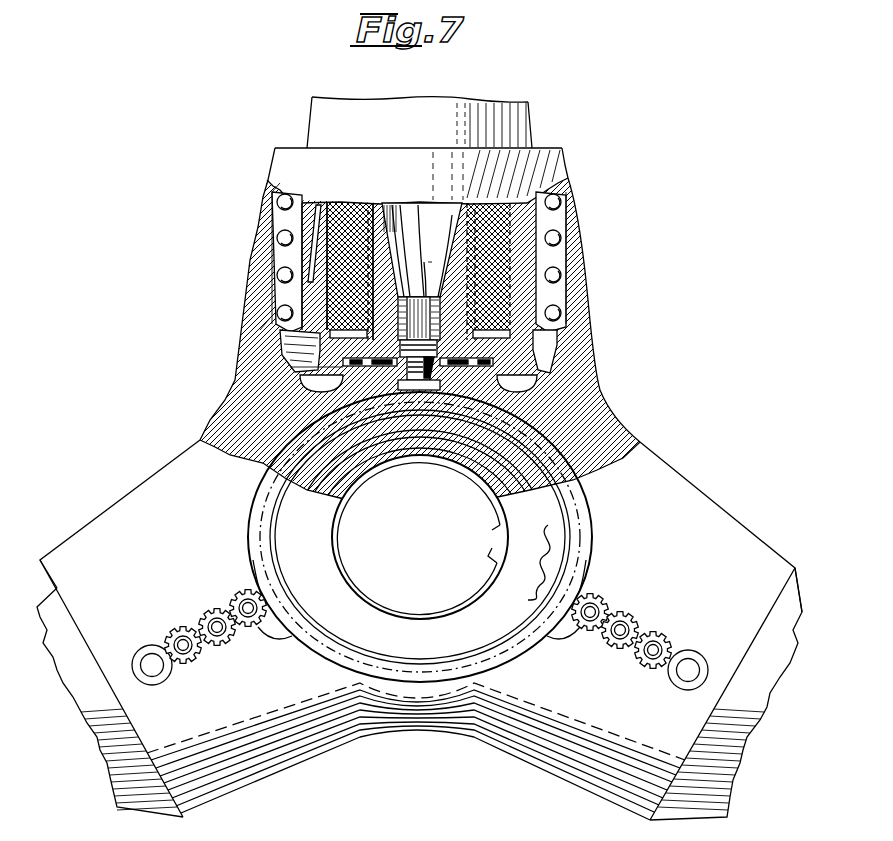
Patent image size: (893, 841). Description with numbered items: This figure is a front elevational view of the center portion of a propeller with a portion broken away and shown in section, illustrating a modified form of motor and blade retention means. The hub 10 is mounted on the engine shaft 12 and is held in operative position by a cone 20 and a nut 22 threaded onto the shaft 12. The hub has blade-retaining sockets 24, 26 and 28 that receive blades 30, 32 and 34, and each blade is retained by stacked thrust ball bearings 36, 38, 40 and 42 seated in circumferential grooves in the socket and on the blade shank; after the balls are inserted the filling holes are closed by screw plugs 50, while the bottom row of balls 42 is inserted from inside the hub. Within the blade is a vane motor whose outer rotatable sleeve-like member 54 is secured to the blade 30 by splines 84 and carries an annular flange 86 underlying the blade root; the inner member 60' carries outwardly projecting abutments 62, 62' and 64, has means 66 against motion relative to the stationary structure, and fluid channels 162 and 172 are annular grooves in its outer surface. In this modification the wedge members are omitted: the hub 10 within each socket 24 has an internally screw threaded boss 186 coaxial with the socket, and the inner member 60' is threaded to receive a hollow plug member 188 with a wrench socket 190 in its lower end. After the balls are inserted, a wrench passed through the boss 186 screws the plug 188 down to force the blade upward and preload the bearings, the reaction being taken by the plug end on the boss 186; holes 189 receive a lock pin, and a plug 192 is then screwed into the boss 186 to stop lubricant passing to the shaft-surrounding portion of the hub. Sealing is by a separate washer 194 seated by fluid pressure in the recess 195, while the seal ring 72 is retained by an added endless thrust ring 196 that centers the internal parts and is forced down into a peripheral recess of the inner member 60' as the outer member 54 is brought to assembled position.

The hub 10 is at (222, 402).
The shaft 12 is at (450, 453).
The cone 20 is at (447, 430).
The nut 22 is at (363, 490).
The blade-retaining socket 24 is at (260, 217).
The blade-retaining socket 26 is at (707, 496).
The blade-retaining socket 28 is at (130, 492).
The blade 30 is at (577, 200).
The blade 32 is at (752, 693).
The blade 34 is at (83, 678).
The thrust ball bearing 36 is at (272, 190).
The thrust ball bearing 38 is at (278, 240).
The thrust ball bearing 40 is at (278, 277).
The bottom row of balls 42 is at (278, 313).
The screw plug 50 is at (245, 590).
The outer rotatable sleeve-like member 54 is at (323, 253).
The inner member 60' is at (422, 250).
The abutment 62 is at (488, 249).
The abutment 62' is at (491, 320).
The abutment 64 is at (355, 200).
The splines 66 is at (452, 250).
The sealing ring 72 is at (310, 353).
The splines 84 is at (270, 295).
The annular flange 86 is at (310, 348).
The fluid channel 162 is at (398, 226).
The fluid channel 172 is at (400, 242).
The internally screw threaded boss 186 is at (402, 355).
The plug member 188 is at (400, 258).
The holes 189 is at (426, 262).
The wrench socket 190 is at (425, 279).
The plug 192 is at (438, 355).
The washer 194 is at (345, 330).
The recess 195 is at (530, 358).
The endless thrust ring 196 is at (290, 367).